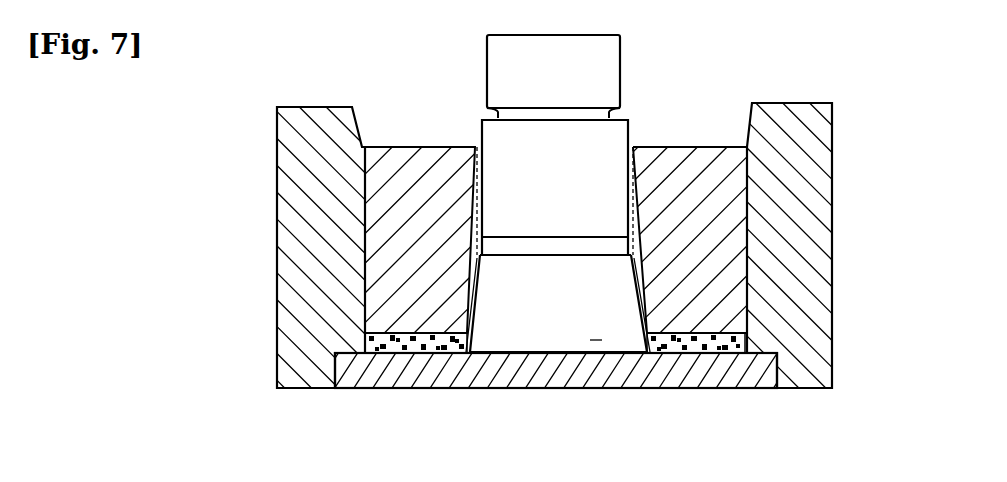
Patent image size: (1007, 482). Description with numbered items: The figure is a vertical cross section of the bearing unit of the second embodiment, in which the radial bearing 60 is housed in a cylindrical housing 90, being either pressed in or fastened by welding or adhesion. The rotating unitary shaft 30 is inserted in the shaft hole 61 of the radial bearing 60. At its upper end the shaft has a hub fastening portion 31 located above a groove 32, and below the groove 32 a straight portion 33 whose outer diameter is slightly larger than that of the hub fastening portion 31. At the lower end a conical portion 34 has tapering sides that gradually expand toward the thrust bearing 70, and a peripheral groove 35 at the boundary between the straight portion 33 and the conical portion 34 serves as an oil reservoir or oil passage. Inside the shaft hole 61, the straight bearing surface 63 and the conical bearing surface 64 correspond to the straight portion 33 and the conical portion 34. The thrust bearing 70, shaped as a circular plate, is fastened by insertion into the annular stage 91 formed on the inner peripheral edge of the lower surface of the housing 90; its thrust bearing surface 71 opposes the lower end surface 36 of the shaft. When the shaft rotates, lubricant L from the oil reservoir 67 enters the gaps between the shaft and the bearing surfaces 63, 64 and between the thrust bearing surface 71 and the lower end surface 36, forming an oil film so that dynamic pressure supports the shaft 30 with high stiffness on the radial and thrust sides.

The rotating unitary shaft 30 is at (600, 150).
The hub fastening portion 31 is at (607, 70).
The groove 32 is at (497, 118).
The straight portion 33 is at (624, 172).
The conical portion 34 is at (596, 338).
The peripheral groove 35 is at (478, 240).
The lower end surface 36 is at (536, 355).
The radial bearing 60 is at (713, 203).
The shaft hole 61 is at (486, 161).
The straight bearing surface 63 is at (627, 207).
The conical bearing surface 64 is at (633, 313).
The oil reservoir 67 is at (430, 350).
The thrust bearing 70 is at (725, 370).
The thrust bearing surface 71 is at (500, 349).
The cylindrical housing 90 is at (312, 292).
The annular stage 91 is at (340, 370).
The lubricant L is at (693, 352).